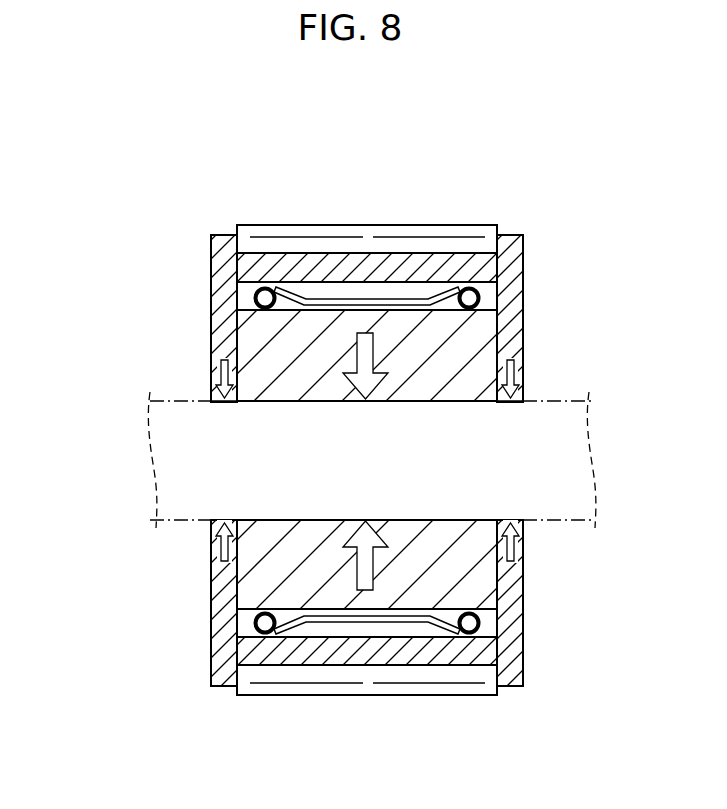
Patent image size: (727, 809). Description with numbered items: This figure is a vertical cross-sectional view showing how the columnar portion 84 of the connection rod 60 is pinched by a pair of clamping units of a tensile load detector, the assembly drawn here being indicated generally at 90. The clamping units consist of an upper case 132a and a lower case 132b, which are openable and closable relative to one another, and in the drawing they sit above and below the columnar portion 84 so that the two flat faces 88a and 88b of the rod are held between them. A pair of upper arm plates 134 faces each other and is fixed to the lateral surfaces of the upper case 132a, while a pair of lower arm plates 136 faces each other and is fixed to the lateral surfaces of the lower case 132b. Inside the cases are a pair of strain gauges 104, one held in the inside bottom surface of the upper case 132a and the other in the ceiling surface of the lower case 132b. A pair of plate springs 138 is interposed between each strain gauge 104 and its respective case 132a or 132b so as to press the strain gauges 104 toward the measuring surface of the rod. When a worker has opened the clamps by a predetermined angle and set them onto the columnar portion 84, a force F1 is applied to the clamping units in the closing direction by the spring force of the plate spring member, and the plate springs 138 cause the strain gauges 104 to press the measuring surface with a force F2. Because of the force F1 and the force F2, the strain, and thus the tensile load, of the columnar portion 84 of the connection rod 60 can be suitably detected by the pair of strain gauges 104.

The connection rod 60 is at (136, 449).
The columnar portion 84 is at (332, 395).
The flat face 88a is at (322, 396).
The flat face 88b is at (322, 527).
The bearing unit 90 is at (522, 203).
The strain gauge 104 is at (440, 368).
The upper case 132a is at (368, 225).
The lower case 132b is at (368, 695).
The upper arm plate 134 is at (211, 256).
The lower arm plate 136 is at (212, 668).
The plate spring 138 is at (495, 302).
The force F1 is at (216, 381).
The force F2 is at (382, 357).